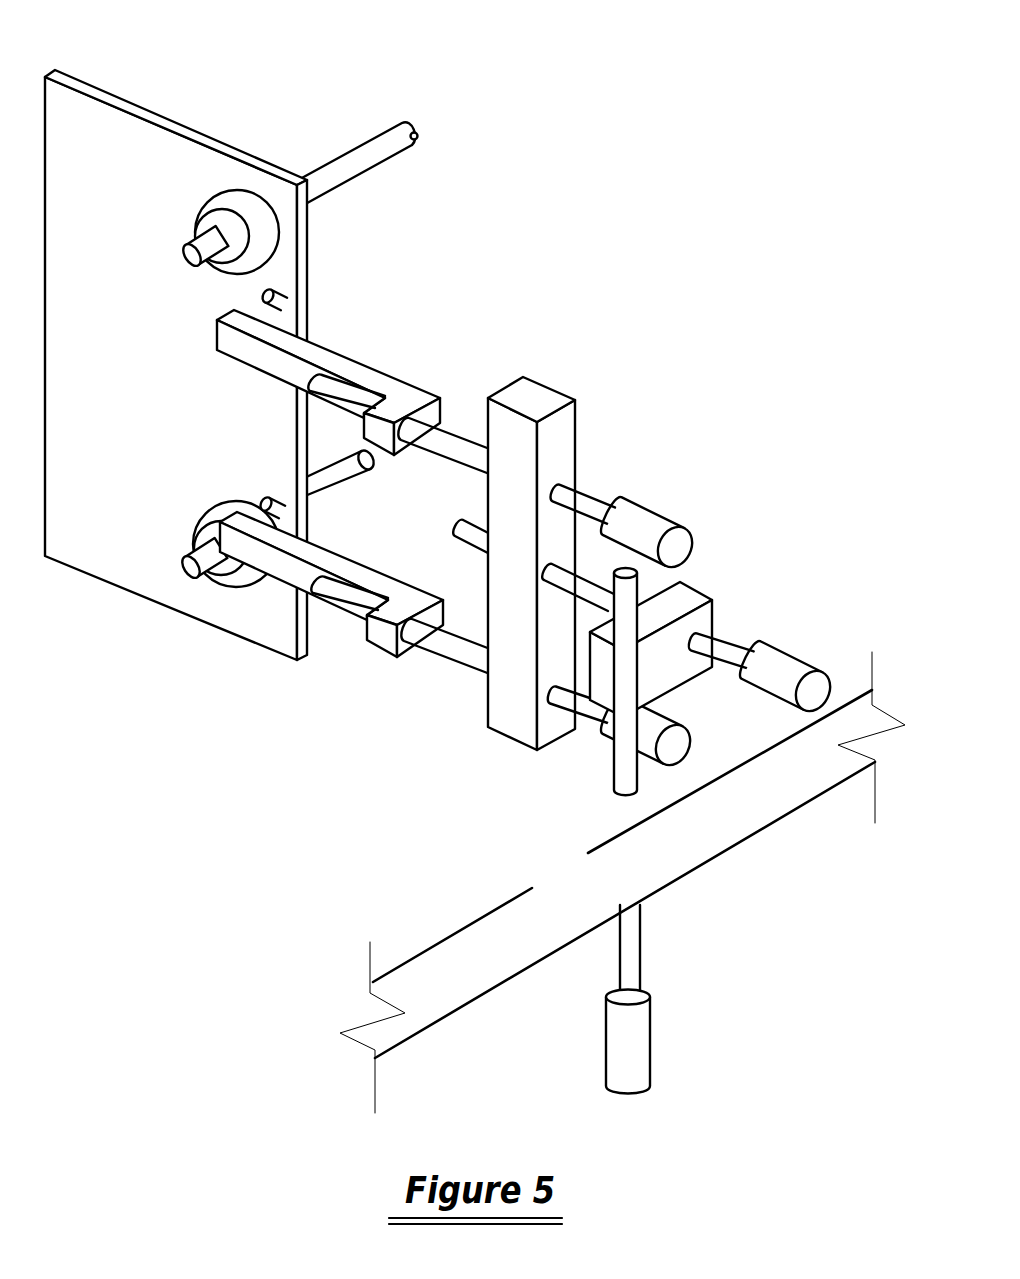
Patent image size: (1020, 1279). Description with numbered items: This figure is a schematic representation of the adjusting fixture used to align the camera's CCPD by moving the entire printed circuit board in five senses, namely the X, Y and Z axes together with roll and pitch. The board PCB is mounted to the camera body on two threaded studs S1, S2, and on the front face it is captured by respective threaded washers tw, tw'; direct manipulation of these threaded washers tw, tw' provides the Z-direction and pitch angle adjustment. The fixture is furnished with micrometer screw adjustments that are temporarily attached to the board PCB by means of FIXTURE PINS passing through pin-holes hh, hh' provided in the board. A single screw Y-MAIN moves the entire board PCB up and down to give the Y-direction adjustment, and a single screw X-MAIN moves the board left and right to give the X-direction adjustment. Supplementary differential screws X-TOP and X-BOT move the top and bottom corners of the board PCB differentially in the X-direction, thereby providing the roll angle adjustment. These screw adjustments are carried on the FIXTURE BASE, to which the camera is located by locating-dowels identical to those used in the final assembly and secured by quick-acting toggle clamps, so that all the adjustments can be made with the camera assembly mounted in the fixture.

The printed circuit board PCB is at (193, 132).
The threaded washer tw is at (189, 223).
The threaded stud S1 is at (187, 263).
The pin-hole hh is at (320, 275).
The fixture pins FIXTURE PINS is at (263, 294).
The pin-hole hh' is at (259, 455).
The threaded stud S2 is at (198, 553).
The threaded washer tw' is at (236, 621).
The differential screw X-TOP is at (658, 507).
The X-main screw X-MAIN is at (780, 650).
The differential screw X-BOT is at (605, 752).
The fixture base FIXTURE BASE is at (622, 882).
The Y-main screw Y-MAIN is at (646, 1033).